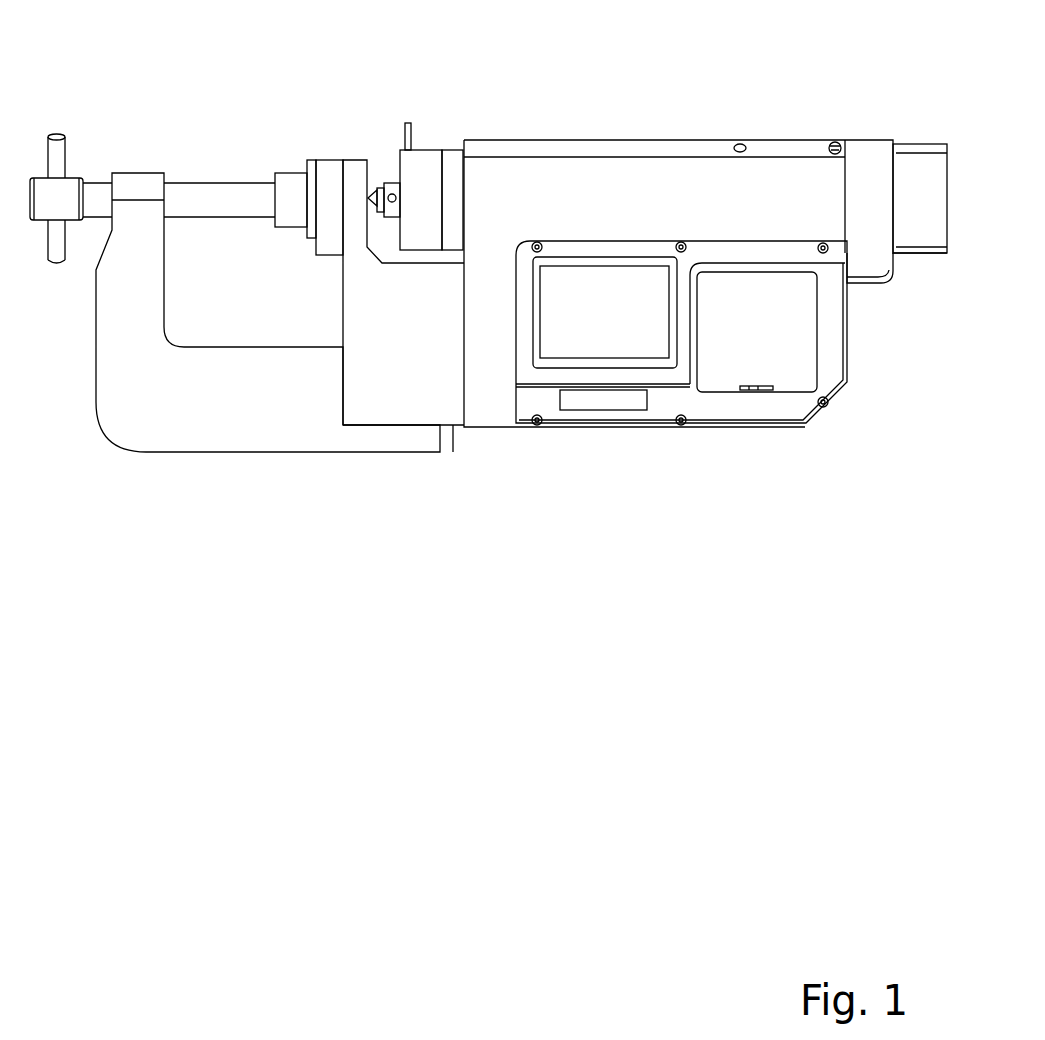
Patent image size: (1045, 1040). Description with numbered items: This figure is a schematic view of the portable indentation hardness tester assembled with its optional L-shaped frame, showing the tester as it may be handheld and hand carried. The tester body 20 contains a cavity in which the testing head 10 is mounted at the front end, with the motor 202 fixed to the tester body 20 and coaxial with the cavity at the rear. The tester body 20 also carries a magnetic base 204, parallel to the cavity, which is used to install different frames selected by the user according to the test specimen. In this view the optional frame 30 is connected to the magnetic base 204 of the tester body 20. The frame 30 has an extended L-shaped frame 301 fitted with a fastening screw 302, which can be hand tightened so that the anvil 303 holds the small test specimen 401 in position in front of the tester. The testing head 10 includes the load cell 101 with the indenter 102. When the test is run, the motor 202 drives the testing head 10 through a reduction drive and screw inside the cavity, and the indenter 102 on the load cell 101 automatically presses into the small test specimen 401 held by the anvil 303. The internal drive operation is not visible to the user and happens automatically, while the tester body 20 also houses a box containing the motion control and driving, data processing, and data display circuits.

The testing head 10 is at (416, 125).
The load cell 101 is at (420, 165).
The indenter 102 is at (374, 173).
The tester body 20 is at (557, 183).
The motor 202 is at (922, 160).
The magnetic base 204 is at (360, 395).
The frame 30 is at (241, 332).
The L-shaped frame 301 is at (135, 443).
The fastening screw 302 is at (226, 192).
The anvil 303 is at (291, 178).
The small test specimen 401 is at (330, 187).